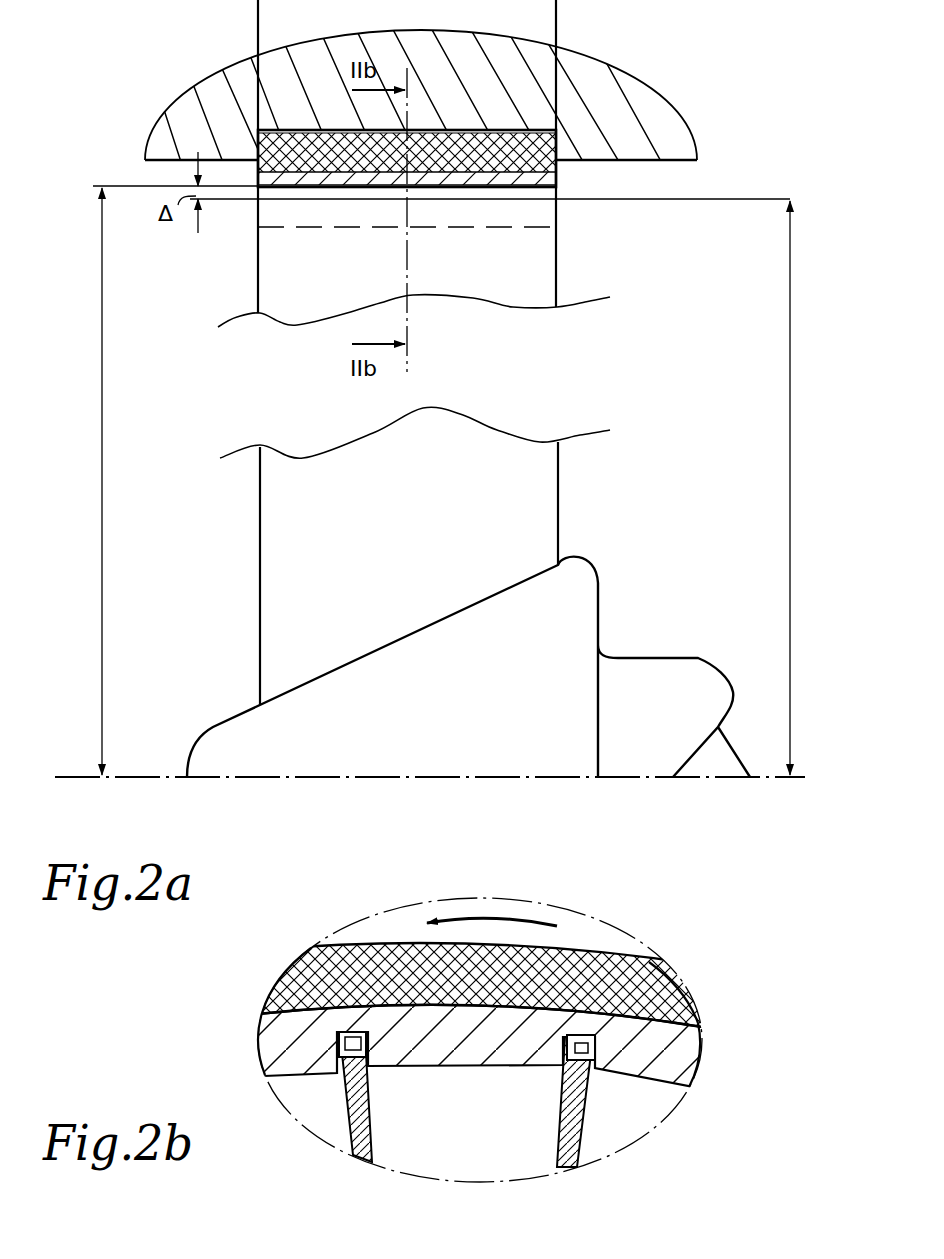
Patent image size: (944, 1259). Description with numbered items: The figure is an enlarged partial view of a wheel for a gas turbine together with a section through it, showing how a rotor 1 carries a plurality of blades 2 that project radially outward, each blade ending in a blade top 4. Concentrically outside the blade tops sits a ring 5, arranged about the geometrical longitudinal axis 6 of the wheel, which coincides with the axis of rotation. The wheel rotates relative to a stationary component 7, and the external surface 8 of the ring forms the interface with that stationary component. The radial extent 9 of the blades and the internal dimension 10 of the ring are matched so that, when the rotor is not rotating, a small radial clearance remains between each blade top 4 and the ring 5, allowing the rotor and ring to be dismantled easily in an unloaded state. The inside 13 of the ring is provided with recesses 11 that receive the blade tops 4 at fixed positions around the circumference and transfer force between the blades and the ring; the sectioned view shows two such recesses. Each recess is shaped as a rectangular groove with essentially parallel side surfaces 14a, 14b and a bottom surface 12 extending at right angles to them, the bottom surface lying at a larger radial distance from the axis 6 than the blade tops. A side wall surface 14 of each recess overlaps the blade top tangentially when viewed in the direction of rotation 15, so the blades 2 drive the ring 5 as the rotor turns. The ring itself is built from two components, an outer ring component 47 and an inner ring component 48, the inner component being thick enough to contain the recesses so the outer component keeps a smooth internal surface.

In FIG. 2A, the rotor 1 is at (553, 617).
In FIG. 2A, the blades 2 is at (287, 272).
In FIG. 2B, the blades 2 is at (352, 1128).
In FIG. 2A, the blade top 4 is at (378, 188).
In FIG. 2A, the ring 5 is at (501, 140).
In FIG. 2B, the ring 5 is at (266, 1009).
In FIG. 2A, the geometrical longitudinal axis 6 is at (128, 777).
In FIG. 2A, the stationary component 7 is at (587, 107).
In FIG. 2A, the external surface of the ring 8 is at (318, 126).
In FIG. 2A, the extent of the blades in a radial direction 9 is at (790, 440).
In FIG. 2A, the internal dimension of the ring 10 is at (100, 342).
In FIG. 2A, the recesses 11 is at (537, 190).
In FIG. 2B, the recesses 11 is at (270, 1028).
In FIG. 2A, the bottom surface of the recess 12 is at (468, 190).
In FIG. 2B, the bottom surface of the recess 12 is at (356, 1045).
In FIG. 2A, the inside of the ring 13 is at (348, 231).
In FIG. 2B, the inside of the ring 13 is at (472, 1068).
In FIG. 2B, the side wall surface of the recess 14 is at (345, 1053).
In FIG. 2B, the first side surface of the recess 14a is at (588, 1063).
In FIG. 2B, the second side surface of the recess 14b is at (570, 1063).
In FIG. 2B, the direction of rotation 15 is at (487, 915).
In FIG. 2A, the outer ring component 47 is at (600, 167).
In FIG. 2B, the outer ring component 47 is at (668, 983).
In FIG. 2A, the inner ring component 48 is at (533, 181).
In FIG. 2B, the inner ring component 48 is at (667, 1070).